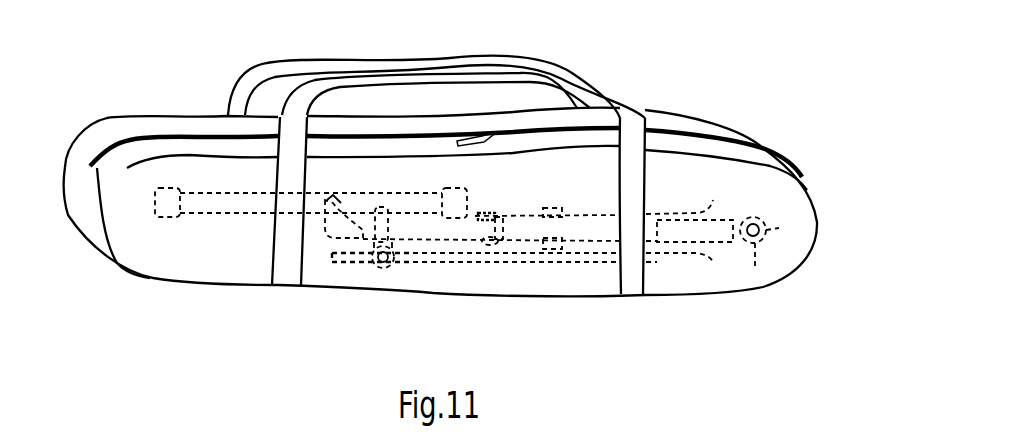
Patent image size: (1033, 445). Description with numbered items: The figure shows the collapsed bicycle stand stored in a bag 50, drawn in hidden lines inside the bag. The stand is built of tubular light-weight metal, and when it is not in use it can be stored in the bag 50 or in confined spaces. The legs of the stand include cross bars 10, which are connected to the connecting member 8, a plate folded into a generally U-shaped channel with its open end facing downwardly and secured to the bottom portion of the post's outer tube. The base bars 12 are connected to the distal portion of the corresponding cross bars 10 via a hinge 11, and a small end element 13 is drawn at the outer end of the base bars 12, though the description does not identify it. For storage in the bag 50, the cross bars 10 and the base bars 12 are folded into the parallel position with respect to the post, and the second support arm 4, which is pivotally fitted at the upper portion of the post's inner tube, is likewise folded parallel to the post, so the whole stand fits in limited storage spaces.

The bag 50 is at (663, 117).
The base bars 12 is at (203, 192).
The end cap 13 is at (167, 217).
The hinge 11 is at (327, 238).
The cross bars 10 is at (417, 242).
The connecting member 8 is at (497, 245).
The second support arm 4 is at (545, 262).